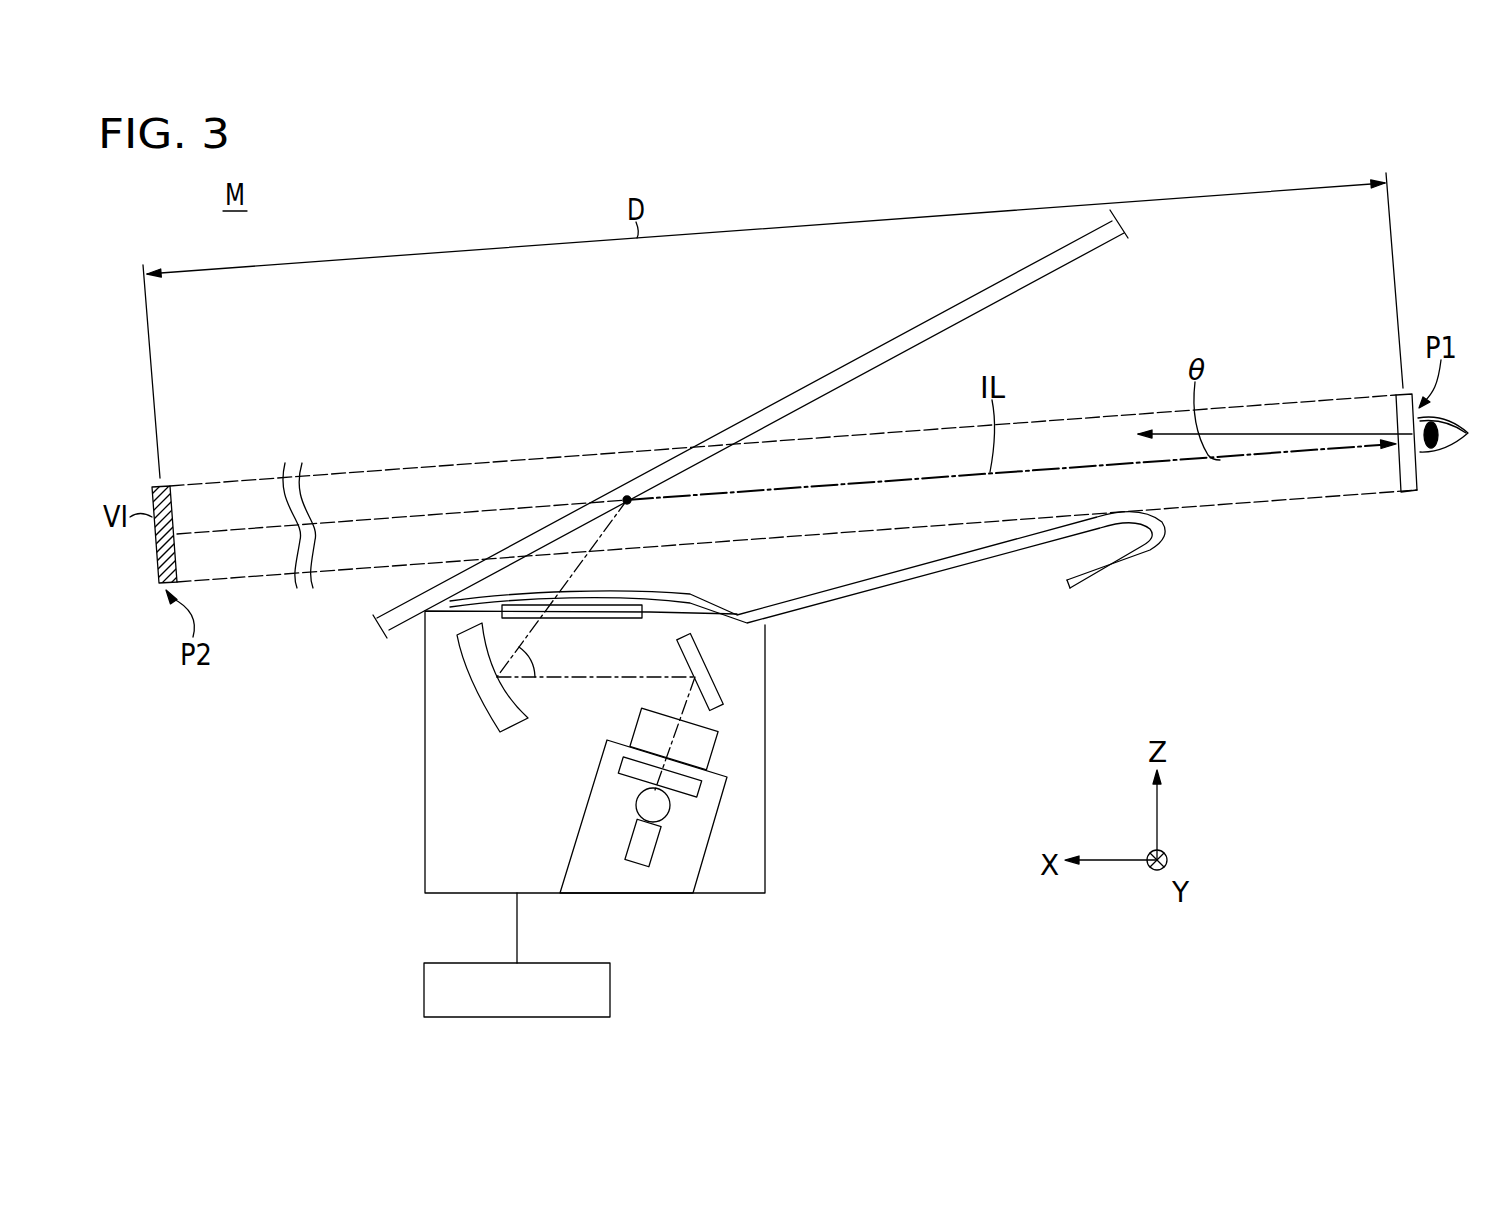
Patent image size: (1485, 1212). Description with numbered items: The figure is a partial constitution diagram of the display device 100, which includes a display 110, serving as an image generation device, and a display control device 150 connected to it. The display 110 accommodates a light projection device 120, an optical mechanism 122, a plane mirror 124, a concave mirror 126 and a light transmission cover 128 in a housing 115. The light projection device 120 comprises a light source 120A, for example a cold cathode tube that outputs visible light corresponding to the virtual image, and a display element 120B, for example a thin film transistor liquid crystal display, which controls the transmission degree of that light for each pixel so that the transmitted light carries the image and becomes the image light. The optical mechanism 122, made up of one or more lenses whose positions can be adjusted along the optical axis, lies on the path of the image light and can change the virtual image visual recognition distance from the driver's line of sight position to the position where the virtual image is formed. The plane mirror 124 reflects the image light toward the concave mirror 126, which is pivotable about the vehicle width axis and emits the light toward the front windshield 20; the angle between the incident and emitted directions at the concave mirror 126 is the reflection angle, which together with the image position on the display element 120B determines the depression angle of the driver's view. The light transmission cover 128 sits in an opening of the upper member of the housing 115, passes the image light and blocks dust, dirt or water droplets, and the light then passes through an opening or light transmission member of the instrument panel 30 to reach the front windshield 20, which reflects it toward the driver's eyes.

The front windshield 20 is at (921, 326).
The instrument panel 30 is at (965, 570).
The display device 100 is at (348, 907).
The display 110 is at (782, 640).
The housing 115 is at (424, 684).
The light projection device 120 is at (687, 858).
The light source 120A is at (657, 850).
The display element 120B is at (720, 792).
The optical mechanism 122 is at (713, 752).
The plane mirror 124 is at (721, 690).
The concave mirror 126 is at (478, 702).
The light transmission cover 128 is at (603, 618).
The display control device 150 is at (546, 963).